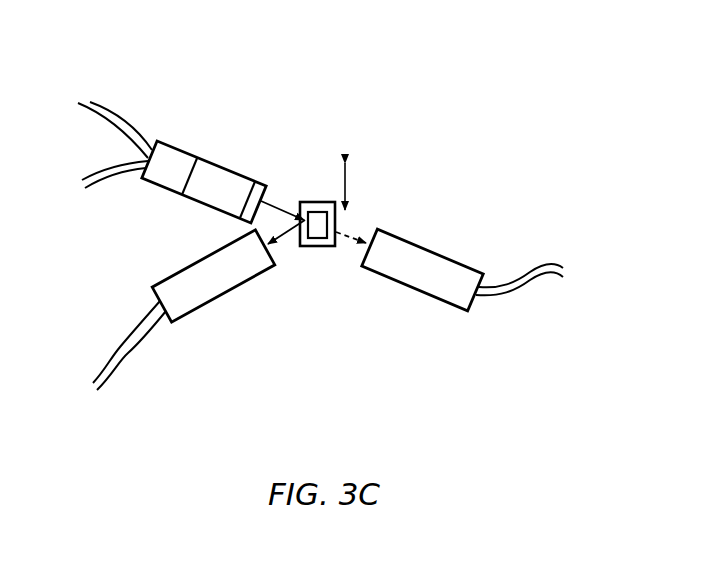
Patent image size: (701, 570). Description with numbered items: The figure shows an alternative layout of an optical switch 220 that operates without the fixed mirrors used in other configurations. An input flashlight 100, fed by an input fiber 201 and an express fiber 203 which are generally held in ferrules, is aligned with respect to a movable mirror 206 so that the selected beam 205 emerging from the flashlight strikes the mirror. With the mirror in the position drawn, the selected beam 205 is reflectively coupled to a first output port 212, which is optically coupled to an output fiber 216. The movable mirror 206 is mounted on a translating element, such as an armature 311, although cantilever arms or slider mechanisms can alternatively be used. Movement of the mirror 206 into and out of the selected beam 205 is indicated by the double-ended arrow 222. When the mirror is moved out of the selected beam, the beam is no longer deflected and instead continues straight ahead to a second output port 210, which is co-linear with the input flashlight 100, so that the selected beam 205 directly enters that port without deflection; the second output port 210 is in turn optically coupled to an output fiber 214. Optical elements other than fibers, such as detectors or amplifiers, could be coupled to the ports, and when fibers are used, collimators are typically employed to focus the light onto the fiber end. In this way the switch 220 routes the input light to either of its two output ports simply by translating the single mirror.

The input flashlight 100 is at (198, 157).
The input fiber 201 is at (113, 130).
The express fiber 203 is at (112, 175).
The selected beam 205 is at (275, 200).
The movable mirror 206 is at (320, 247).
The armature 311 is at (320, 202).
The double-ended arrow 222 is at (348, 178).
The optical switch 220 is at (485, 72).
The second output port 210 is at (432, 248).
The output fiber 214 is at (520, 293).
The first output port 212 is at (205, 305).
The output fiber 216 is at (118, 373).